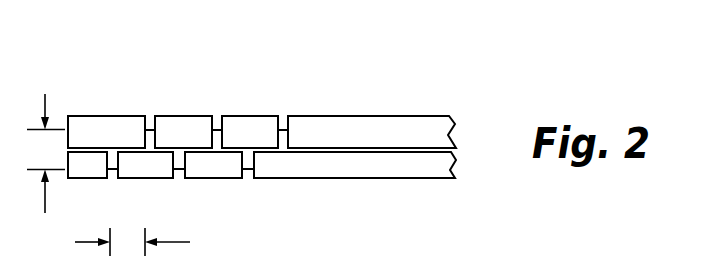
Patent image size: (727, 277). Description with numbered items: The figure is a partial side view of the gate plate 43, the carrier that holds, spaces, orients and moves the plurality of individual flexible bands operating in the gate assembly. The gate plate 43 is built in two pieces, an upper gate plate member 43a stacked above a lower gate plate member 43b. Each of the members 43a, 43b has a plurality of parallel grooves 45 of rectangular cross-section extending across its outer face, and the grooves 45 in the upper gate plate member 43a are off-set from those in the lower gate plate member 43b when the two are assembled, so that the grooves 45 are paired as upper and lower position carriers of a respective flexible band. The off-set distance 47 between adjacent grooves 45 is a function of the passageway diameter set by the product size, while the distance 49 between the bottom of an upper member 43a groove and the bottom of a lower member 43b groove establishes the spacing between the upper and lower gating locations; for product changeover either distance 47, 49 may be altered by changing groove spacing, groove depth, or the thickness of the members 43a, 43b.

The gate plate 43 is at (94, 101).
The upper gate plate member 43a is at (372, 116).
The lower gate plate member 43b is at (372, 178).
The grooves 45 is at (150, 130).
The off-set distance 47 is at (119, 242).
The distance between upper and lower grooves 49 is at (46, 153).